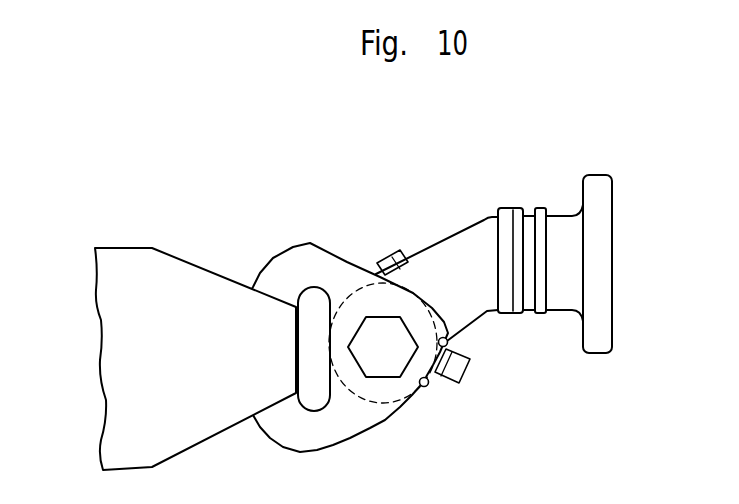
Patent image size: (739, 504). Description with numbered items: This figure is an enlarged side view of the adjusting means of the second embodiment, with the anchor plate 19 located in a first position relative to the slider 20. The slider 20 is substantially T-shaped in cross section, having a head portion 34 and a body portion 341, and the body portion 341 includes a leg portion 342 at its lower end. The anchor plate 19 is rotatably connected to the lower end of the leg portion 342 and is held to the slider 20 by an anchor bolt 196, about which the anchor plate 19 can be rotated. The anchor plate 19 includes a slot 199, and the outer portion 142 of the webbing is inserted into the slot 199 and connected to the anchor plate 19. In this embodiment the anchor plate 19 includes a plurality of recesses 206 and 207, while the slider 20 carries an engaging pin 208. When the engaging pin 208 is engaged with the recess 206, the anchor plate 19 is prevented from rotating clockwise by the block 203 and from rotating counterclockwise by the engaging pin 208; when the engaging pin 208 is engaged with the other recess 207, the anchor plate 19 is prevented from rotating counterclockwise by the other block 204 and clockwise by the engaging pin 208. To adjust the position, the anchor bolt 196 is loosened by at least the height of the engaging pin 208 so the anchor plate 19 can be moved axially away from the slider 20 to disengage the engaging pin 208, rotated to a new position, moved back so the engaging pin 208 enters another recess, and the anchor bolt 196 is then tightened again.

The anchor plate 19 is at (300, 237).
The outer portion of the webbing 142 is at (181, 259).
The slot 199 is at (308, 290).
The anchor bolt 196 is at (366, 316).
The slider 20 is at (446, 229).
The block 203 is at (405, 250).
The leg portion 342 is at (481, 246).
The body portion 341 is at (560, 230).
The head portion 34 is at (600, 230).
The recess 206 is at (444, 337).
The recess 207 is at (426, 387).
The engaging pin 208 is at (451, 344).
The block 204 is at (457, 383).